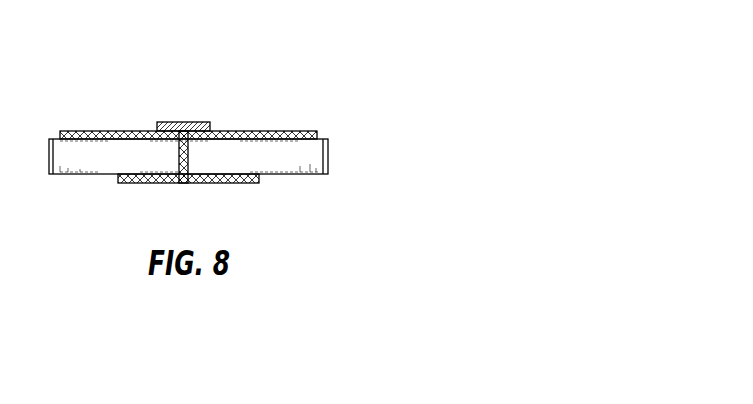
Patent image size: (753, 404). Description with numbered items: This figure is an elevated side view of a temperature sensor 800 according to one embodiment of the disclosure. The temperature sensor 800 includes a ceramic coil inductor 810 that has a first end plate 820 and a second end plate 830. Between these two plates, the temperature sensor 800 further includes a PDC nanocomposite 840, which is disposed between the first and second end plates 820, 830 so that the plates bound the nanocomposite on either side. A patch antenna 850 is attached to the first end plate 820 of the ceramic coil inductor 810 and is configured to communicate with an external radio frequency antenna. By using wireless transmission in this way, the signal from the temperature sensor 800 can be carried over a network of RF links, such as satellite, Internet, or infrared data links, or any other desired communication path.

The temperature sensor 800 is at (332, 48).
The ceramic coil inductor 810 is at (285, 131).
The first end plate 820 is at (162, 122).
The second end plate 830 is at (130, 183).
The PDC nanocomposite 840 is at (305, 174).
The patch antenna 850 is at (184, 122).